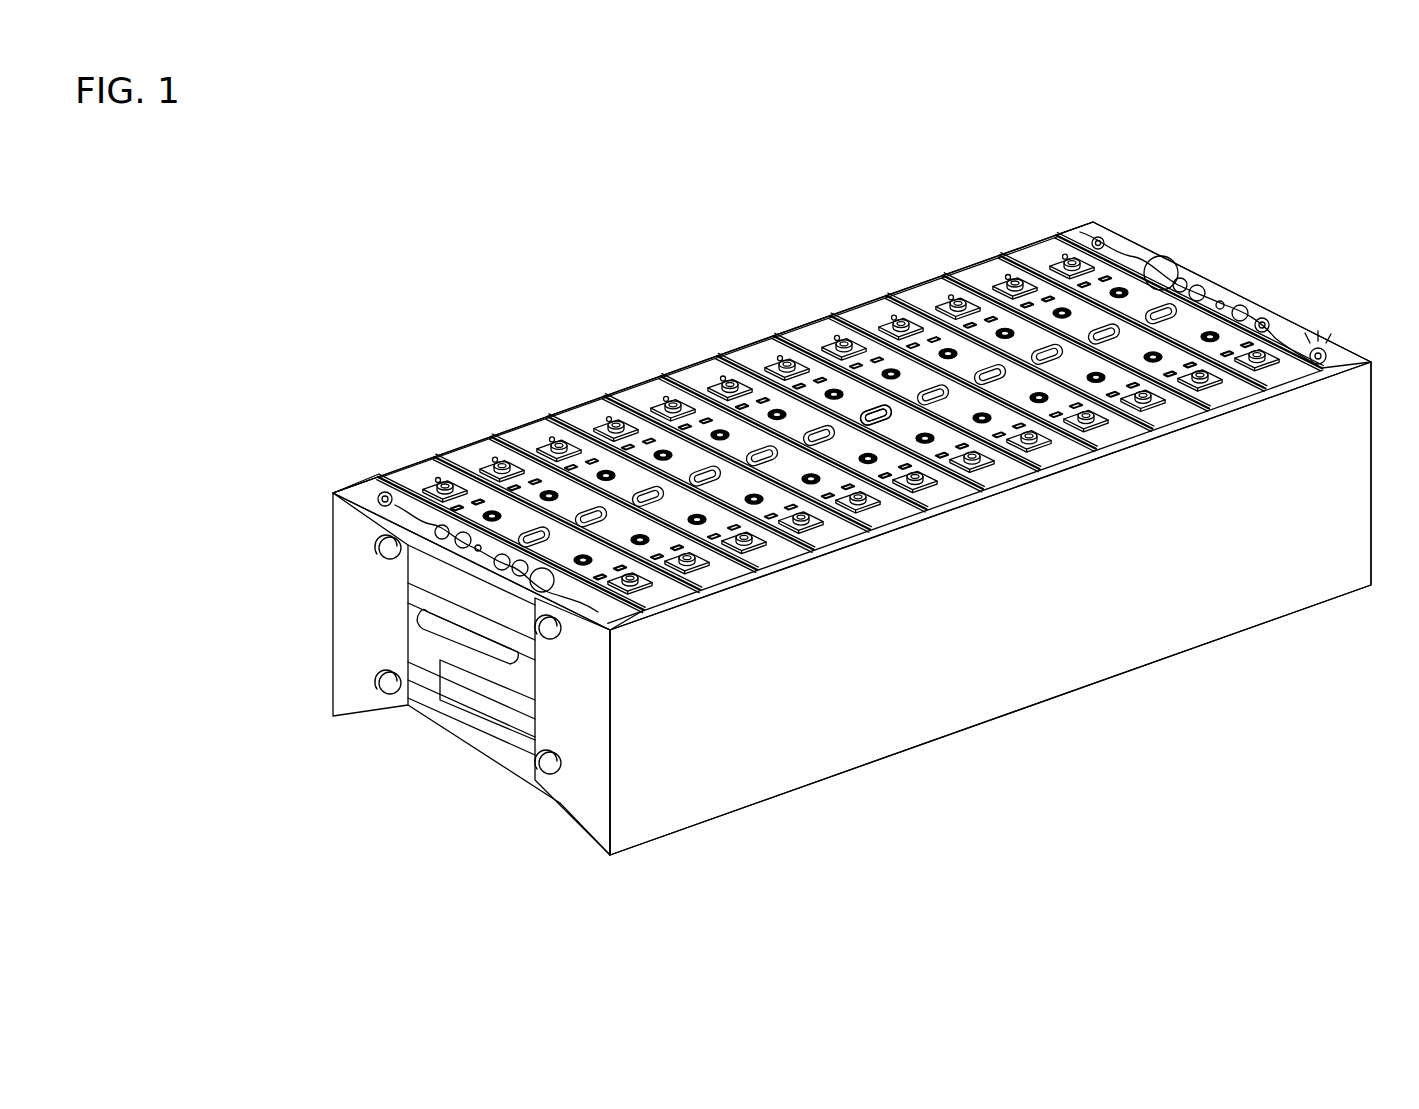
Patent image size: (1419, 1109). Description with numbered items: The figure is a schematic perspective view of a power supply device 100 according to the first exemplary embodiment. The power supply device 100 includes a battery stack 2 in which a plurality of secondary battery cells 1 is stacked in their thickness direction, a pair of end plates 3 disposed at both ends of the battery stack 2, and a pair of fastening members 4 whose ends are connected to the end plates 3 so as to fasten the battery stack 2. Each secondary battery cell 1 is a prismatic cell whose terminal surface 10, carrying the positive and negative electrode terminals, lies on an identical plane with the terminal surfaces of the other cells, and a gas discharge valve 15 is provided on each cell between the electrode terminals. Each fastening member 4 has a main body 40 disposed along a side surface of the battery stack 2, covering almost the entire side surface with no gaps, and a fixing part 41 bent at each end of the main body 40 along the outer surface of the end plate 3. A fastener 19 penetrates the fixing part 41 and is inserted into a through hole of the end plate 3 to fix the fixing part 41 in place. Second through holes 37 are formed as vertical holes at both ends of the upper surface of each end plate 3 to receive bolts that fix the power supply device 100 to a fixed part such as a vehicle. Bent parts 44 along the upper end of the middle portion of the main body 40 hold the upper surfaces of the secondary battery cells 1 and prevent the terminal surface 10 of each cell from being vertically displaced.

The power supply device 100 is at (400, 232).
The secondary battery cell 1 is at (473, 497).
The battery stack 2 is at (292, 388).
The end plate 3 is at (457, 668).
The fastening member 4 is at (1088, 648).
The terminal surface 10 is at (1145, 350).
The gas discharge valve 15 is at (876, 410).
The fastener 19 is at (378, 548).
The second through hole 37 is at (386, 492).
The main body 40 is at (884, 706).
The fixing part 41 is at (352, 625).
The bent part 44 is at (1062, 470).